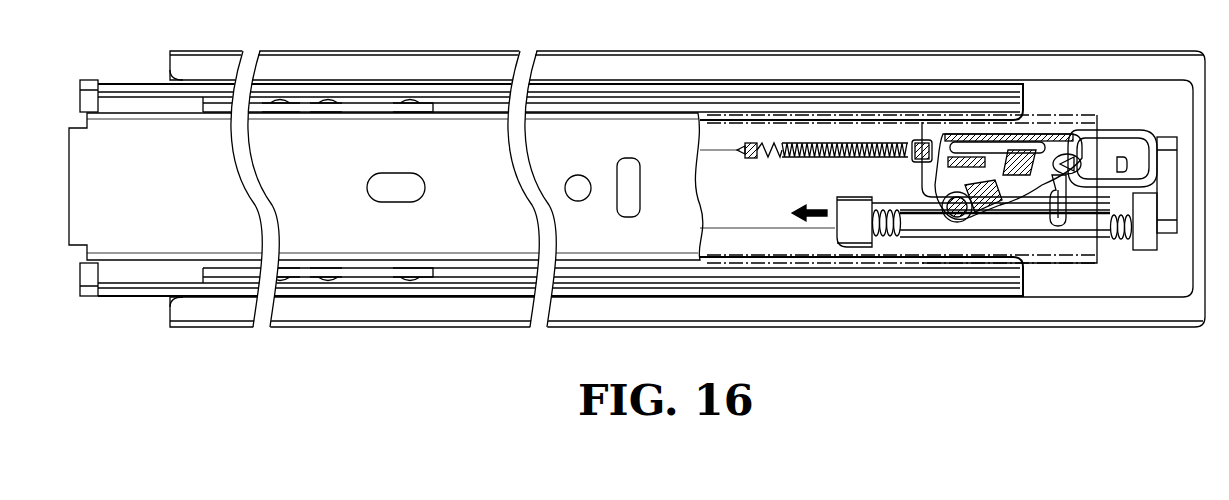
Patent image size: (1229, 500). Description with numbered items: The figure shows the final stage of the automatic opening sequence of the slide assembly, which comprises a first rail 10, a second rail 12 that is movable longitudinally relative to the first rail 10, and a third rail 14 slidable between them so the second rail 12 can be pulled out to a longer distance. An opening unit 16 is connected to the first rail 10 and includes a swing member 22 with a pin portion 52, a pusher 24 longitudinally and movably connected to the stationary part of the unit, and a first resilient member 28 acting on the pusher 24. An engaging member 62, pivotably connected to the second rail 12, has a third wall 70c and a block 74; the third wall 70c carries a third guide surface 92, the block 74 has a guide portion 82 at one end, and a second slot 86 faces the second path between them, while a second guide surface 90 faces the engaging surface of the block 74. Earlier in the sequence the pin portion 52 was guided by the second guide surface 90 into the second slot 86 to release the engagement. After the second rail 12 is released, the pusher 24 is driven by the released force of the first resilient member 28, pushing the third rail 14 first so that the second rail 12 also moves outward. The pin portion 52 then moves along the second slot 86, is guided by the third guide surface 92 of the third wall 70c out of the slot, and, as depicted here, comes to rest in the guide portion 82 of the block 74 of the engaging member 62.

The first rail 10 is at (1162, 275).
The second rail 12 is at (663, 222).
The third rail 14 is at (772, 265).
The opening unit 16 is at (1113, 236).
The swing member 22 is at (1145, 150).
The pusher 24 is at (857, 223).
The first resilient member 28 is at (897, 233).
The pin portion 52 is at (1115, 152).
The engaging member 62 is at (932, 212).
The third wall 70c is at (1017, 163).
The block 74 is at (1045, 172).
The guide portion 82 is at (1072, 157).
The second slot 86 is at (968, 143).
The second guide surface 90 is at (990, 157).
The third guide surface 92 is at (1038, 215).